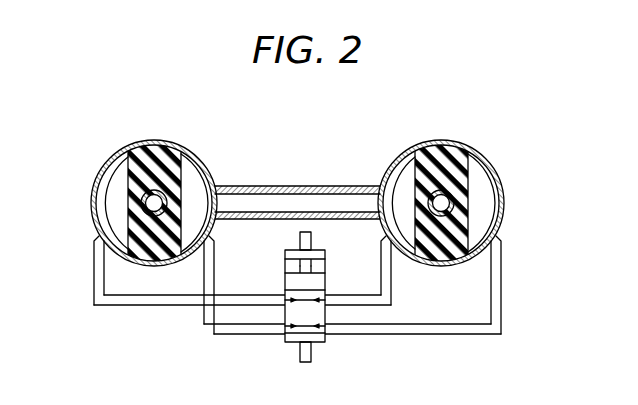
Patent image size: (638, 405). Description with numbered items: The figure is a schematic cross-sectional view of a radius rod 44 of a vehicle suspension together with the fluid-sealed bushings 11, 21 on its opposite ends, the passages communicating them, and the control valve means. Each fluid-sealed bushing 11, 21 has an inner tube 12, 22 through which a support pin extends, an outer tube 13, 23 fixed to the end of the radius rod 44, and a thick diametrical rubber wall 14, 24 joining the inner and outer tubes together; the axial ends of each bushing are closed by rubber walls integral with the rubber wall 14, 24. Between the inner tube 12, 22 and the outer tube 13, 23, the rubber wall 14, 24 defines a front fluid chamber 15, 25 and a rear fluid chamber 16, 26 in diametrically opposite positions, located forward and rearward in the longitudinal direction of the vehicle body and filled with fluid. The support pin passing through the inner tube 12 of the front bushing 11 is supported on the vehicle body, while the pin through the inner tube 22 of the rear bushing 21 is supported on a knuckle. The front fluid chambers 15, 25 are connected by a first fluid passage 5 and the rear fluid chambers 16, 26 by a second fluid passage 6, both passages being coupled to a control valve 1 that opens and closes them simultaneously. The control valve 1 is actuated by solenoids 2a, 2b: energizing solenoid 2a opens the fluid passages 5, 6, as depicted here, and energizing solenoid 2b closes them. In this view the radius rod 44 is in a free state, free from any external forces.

The control valve 1 is at (331, 288).
The solenoid 2a is at (300, 238).
The solenoid 2b is at (312, 353).
The first fluid passage 5 is at (163, 305).
The second fluid passage 6 is at (447, 324).
The fluid-sealed bushing 11 is at (164, 133).
The inner tube 12 is at (140, 203).
The outer tube 13 is at (190, 156).
The rubber wall 14 is at (141, 152).
The front fluid chamber 15 is at (112, 178).
The rear fluid chamber 16 is at (198, 188).
The fluid-sealed bushing 21 is at (452, 134).
The inner tube 22 is at (453, 203).
The outer tube 23 is at (418, 150).
The rubber wall 24 is at (456, 162).
The front fluid chamber 25 is at (392, 178).
The rear fluid chamber 26 is at (477, 180).
The radius rod 44 is at (306, 186).